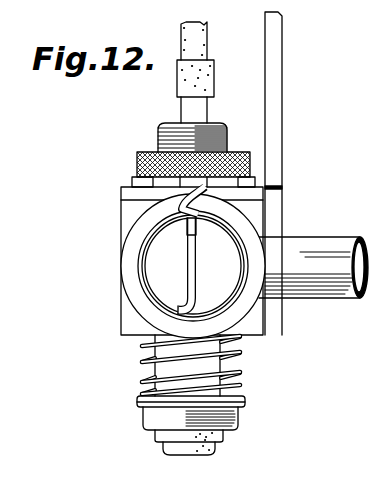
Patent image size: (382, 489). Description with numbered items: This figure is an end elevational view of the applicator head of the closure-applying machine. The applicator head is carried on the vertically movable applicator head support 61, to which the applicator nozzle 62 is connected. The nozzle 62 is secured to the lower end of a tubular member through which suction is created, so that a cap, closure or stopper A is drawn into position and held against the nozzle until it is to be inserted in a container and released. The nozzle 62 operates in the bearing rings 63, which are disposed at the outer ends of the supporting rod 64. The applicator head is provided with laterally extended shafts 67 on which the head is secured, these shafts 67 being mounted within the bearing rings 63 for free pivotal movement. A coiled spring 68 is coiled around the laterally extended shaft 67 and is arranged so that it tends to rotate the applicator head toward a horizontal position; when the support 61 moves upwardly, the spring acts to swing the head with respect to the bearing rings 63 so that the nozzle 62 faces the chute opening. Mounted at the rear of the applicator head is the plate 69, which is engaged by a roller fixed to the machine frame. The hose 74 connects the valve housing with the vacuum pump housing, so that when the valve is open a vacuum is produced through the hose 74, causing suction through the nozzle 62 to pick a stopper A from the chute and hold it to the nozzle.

The vertically movable applicator head support 61 is at (121, 220).
The applicator nozzle 62 is at (239, 420).
The bearing rings 63 is at (121, 274).
The supporting rod 64 is at (332, 238).
The laterally extended shafts 67 is at (201, 250).
The coiled spring 68 is at (141, 250).
The plate 69 is at (283, 123).
The hose 74 is at (209, 47).
The closure or stopper A is at (168, 446).